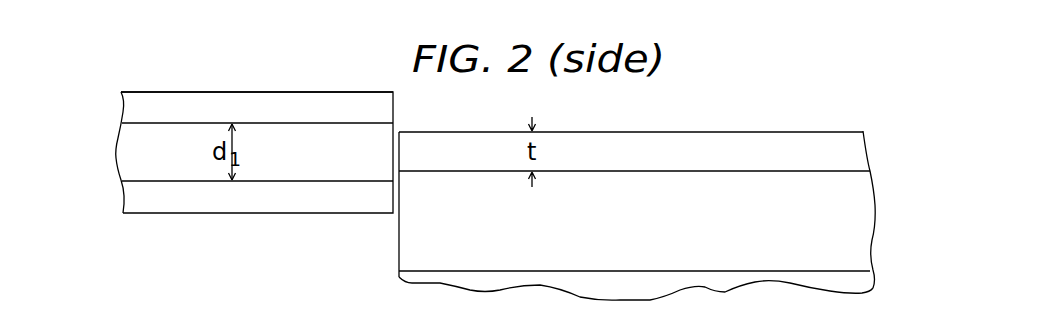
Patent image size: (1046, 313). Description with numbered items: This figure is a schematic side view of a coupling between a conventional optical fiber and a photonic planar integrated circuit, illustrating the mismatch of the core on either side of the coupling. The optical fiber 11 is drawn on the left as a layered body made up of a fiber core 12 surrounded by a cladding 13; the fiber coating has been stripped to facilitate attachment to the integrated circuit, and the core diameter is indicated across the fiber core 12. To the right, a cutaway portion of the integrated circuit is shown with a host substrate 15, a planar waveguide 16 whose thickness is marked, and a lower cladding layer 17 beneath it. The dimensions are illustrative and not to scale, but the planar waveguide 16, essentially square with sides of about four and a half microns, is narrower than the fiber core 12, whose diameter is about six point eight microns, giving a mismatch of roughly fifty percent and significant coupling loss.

The optical fiber 11 is at (207, 215).
The fiber core 12 is at (117, 152).
The cladding 13 is at (222, 102).
The host substrate 15 is at (399, 249).
The planar waveguide 16 is at (652, 163).
The lower cladding layer 17 is at (872, 205).